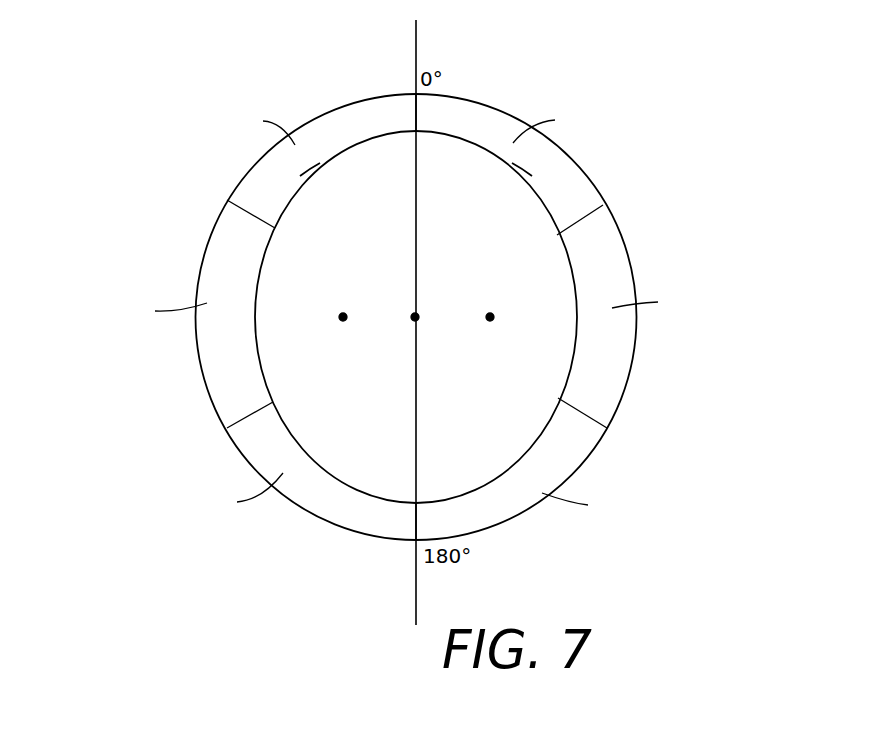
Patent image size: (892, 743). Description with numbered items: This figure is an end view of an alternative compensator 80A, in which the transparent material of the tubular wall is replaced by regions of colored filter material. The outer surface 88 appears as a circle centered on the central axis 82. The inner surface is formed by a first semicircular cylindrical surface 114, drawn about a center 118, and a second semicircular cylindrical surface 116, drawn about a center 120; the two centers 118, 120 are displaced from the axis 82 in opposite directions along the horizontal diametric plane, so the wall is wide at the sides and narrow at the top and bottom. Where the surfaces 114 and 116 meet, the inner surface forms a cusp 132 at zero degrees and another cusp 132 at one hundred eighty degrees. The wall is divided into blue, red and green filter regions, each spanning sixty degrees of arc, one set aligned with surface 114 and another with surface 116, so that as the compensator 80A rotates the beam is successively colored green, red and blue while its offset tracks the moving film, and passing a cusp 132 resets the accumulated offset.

The compensator 80A is at (650, 257).
The outer surface 88 is at (628, 377).
The cusp 132 is at (416, 131).
The second semicircular cylindrical surface 116 is at (308, 183).
The first semicircular cylindrical surface 114 is at (515, 182).
The center 118 is at (343, 321).
The central axis 82 is at (415, 321).
The center 120 is at (490, 321).